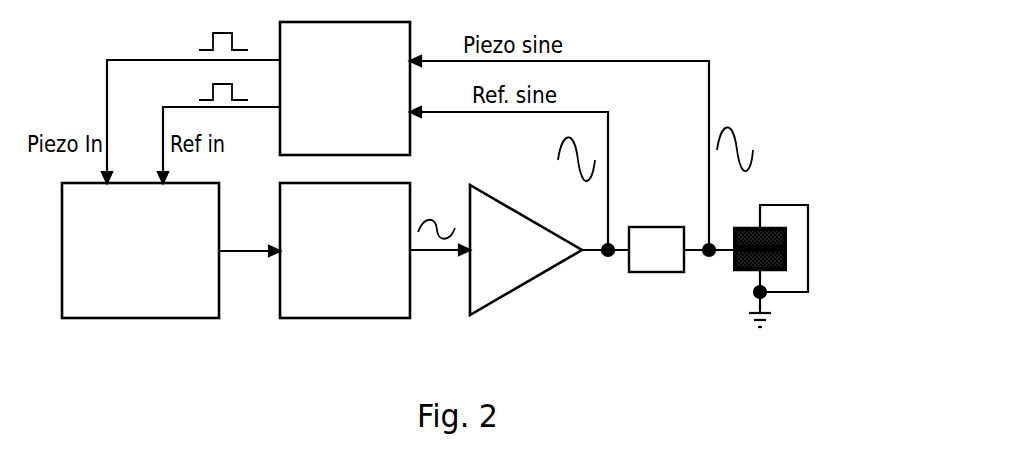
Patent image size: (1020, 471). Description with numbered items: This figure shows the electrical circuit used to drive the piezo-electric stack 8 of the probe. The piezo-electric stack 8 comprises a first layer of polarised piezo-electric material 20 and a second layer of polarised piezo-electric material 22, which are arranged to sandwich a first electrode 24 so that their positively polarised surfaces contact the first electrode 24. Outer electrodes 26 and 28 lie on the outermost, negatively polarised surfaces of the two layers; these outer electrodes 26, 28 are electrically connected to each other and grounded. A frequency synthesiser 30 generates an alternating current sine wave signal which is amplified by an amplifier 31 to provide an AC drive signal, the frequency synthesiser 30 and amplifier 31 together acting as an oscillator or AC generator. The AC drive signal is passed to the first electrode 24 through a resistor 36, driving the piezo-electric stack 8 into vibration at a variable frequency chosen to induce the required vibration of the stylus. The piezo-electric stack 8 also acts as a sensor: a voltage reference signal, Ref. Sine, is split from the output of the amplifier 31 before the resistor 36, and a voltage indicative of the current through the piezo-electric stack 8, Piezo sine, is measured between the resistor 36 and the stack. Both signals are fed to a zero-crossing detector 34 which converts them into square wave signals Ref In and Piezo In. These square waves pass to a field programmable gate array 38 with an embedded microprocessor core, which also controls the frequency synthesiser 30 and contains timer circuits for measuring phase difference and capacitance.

The piezo-electric stack 8 is at (764, 272).
The first layer of polarised piezo-electric material 20 is at (787, 237).
The second layer of polarised piezo-electric material 22 is at (787, 261).
The first electrode 24 is at (733, 266).
The outer electrode 26 is at (747, 228).
The outer electrode 28 is at (745, 272).
The frequency synthesiser 30 is at (329, 267).
The amplifier 31 is at (495, 263).
The zero-crossing detector 34 is at (328, 105).
The resistor 36 is at (670, 227).
The field programmable gate array 38 is at (123, 268).